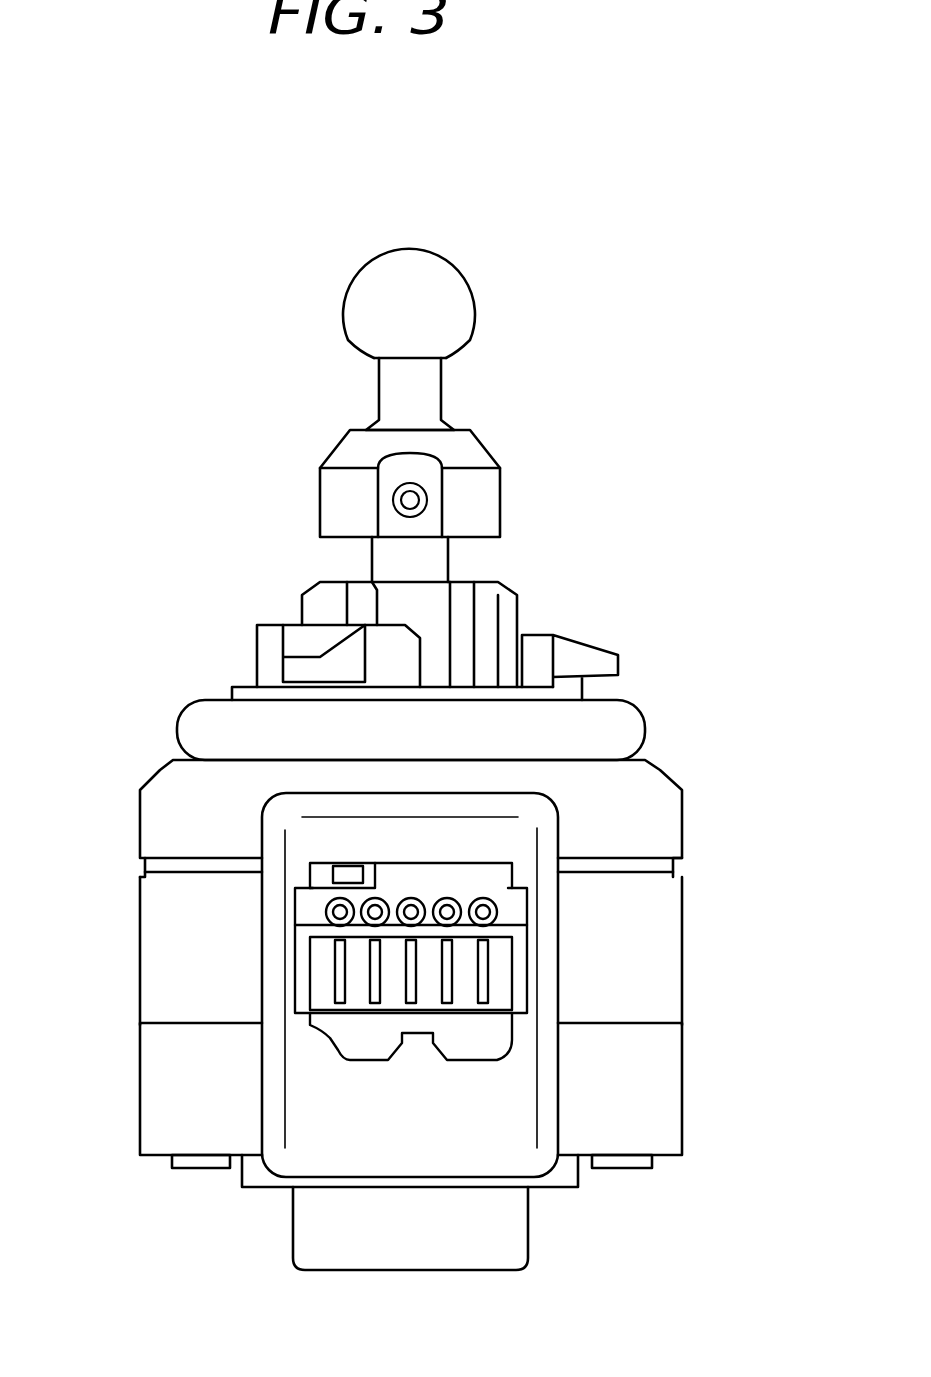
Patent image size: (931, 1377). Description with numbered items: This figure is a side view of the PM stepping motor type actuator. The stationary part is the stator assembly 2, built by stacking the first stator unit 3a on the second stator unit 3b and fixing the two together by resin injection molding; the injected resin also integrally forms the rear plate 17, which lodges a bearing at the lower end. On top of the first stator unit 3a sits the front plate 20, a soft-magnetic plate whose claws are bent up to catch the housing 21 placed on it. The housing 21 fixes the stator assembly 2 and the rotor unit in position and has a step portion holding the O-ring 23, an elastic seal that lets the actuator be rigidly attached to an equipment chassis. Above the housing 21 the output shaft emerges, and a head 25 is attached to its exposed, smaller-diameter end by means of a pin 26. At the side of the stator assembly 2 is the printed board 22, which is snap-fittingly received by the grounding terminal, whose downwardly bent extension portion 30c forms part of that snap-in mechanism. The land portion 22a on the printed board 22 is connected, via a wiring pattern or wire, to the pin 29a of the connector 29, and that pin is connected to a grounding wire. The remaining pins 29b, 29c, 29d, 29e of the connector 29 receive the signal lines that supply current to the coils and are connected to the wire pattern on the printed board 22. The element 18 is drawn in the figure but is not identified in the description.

The stator assembly 2 is at (490, 1022).
The first stator unit 3a is at (640, 947).
The second stator unit 3b is at (461, 1095).
The rear plate 17 is at (307, 1212).
The connector opening 18 is at (310, 1132).
The front plate 20 is at (143, 865).
The housing 21 is at (458, 613).
The printed board 22 is at (417, 1058).
The land portion 22a is at (323, 890).
The O-ring 23 is at (611, 732).
The head 25 is at (453, 315).
The pin 26 is at (410, 498).
The connector 29 is at (494, 1126).
The pin 29a is at (340, 973).
The pin 29b is at (375, 973).
The pin 29c is at (411, 977).
The pin 29d is at (447, 973).
The pin 29e is at (483, 973).
The extension portion 30c is at (347, 877).